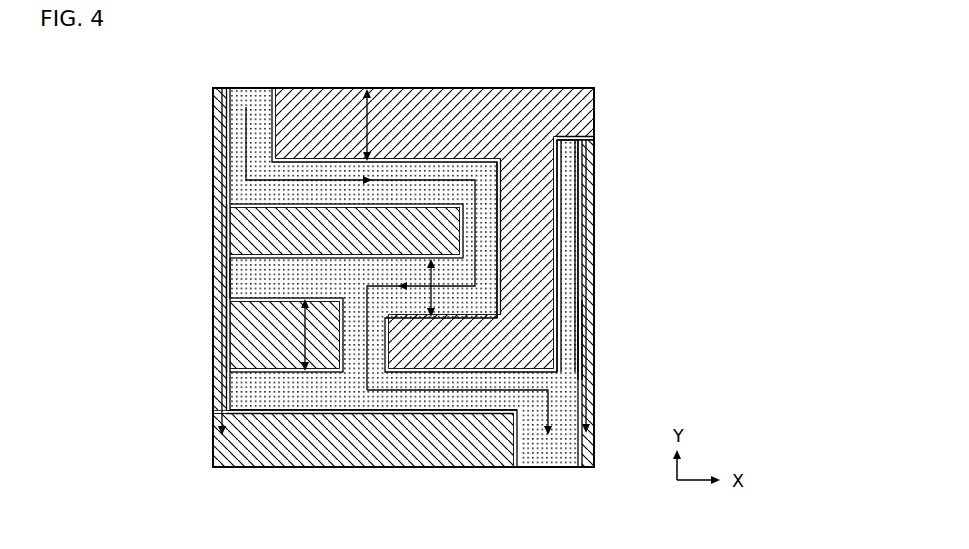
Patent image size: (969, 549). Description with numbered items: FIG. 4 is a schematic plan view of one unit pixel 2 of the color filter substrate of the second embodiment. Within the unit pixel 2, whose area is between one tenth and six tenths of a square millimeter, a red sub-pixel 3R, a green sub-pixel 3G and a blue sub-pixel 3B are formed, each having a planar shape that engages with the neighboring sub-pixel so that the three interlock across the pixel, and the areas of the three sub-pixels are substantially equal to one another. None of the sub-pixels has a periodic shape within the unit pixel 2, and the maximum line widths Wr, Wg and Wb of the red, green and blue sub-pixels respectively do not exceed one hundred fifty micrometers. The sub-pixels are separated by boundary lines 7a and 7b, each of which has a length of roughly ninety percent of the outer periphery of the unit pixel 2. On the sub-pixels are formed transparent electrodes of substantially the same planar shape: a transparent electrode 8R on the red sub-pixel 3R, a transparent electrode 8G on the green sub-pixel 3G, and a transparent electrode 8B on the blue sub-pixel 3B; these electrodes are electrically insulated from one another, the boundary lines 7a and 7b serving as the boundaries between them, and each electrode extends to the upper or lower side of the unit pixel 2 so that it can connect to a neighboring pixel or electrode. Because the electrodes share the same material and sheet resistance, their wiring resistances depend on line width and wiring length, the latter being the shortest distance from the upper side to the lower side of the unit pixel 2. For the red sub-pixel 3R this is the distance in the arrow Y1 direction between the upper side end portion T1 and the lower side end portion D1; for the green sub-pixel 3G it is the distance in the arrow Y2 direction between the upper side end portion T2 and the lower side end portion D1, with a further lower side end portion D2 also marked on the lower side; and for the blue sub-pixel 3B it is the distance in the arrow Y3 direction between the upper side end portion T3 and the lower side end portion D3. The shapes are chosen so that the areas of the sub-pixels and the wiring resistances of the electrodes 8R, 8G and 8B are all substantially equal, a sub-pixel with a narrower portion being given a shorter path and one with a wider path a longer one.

The unit pixel 2 is at (522, 47).
The upper side end portion T1 is at (222, 88).
The upper side end portion T2 is at (253, 88).
The upper side end portion T3 is at (568, 88).
The arrow Y1 direction Y1 is at (222, 298).
The arrow Y2 direction Y2 is at (445, 178).
The arrow Y3 direction Y3 is at (588, 341).
The lower side end portion D1 is at (243, 468).
The second electrode end D2 is at (538, 468).
The lower side end portion D3 is at (588, 468).
The red sub-pixel 3R is at (447, 413).
The green sub-pixel 3G is at (497, 287).
The blue sub-pixel 3B is at (587, 141).
The transparent electrode 8R is at (468, 446).
The transparent electrode 8G is at (482, 270).
The transparent electrode 8B is at (588, 124).
The boundary line 7a is at (330, 400).
The boundary line 7b is at (535, 373).
The maximum line width Wb is at (368, 125).
The maximum line width Wg is at (431, 288).
The maximum line width Wr is at (304, 335).